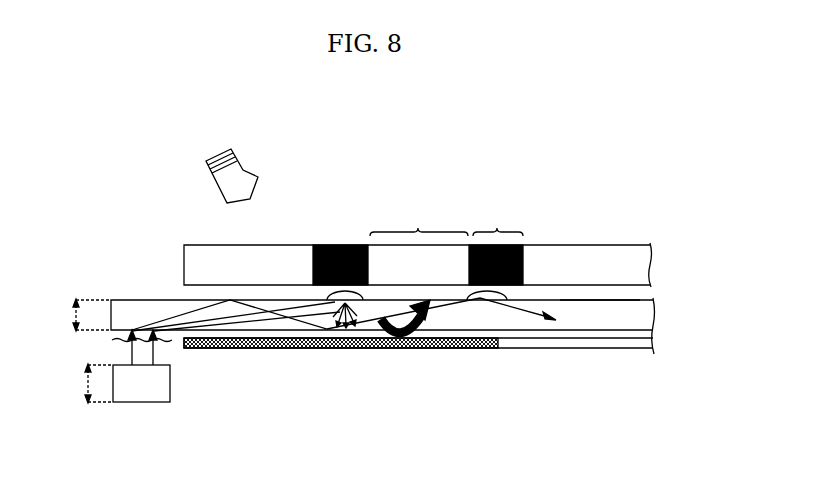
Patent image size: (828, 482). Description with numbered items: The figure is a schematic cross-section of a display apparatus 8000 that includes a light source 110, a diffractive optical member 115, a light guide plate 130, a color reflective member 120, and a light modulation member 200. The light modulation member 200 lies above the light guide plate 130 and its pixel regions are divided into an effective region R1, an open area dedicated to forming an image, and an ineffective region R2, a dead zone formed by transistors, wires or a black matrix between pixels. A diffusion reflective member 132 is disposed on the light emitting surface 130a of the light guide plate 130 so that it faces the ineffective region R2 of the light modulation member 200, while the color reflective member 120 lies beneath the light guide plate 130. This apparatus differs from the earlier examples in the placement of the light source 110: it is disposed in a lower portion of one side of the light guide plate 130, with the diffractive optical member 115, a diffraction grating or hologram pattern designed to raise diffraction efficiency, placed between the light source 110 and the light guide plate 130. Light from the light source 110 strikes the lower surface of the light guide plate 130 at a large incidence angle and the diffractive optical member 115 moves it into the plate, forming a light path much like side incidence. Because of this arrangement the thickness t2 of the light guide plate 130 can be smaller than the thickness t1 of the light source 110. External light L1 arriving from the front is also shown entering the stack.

The display apparatus 8000 is at (606, 149).
The light modulation member 200 is at (672, 245).
The light guide plate 130 is at (672, 300).
The light emitting surface 130a is at (597, 300).
The diffusion reflective member 132 is at (508, 294).
The color reflective member 120 is at (672, 338).
The diffractive optical member 115 is at (110, 340).
The light source 110 is at (150, 403).
The effective region R1 is at (419, 219).
The ineffective region R2 is at (498, 219).
The external light L1 is at (243, 166).
The thickness of the light source t1 is at (86, 383).
The thickness of the light guide plate t2 is at (80, 315).